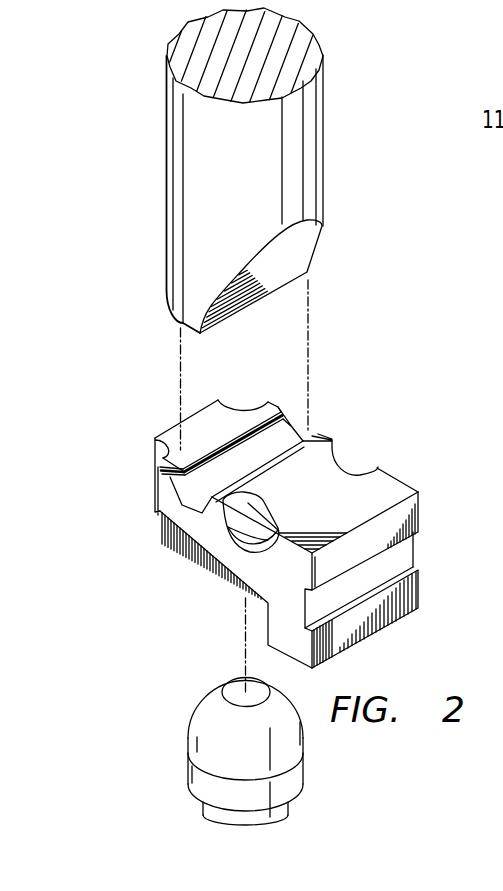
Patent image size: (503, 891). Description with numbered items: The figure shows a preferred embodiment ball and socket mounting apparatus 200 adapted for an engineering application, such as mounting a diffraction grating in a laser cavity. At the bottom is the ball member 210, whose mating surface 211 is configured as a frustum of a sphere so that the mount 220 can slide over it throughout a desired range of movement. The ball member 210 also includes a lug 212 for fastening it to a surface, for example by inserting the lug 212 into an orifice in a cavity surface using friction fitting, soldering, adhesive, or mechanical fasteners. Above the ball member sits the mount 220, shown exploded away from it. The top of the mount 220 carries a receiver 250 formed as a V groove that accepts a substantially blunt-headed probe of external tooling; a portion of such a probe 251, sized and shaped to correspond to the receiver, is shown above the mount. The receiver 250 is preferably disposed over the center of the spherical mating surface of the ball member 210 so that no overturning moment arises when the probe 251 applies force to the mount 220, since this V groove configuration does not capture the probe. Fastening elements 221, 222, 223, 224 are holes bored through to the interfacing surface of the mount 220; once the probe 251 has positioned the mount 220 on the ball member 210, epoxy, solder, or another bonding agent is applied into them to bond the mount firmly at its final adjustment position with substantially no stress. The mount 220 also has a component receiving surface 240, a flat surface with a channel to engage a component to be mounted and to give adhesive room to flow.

The mounting apparatus 200 is at (80, 460).
The ball member 210 is at (232, 687).
The mating surface 211 is at (202, 723).
The lug 212 is at (213, 817).
The mount 220 is at (394, 488).
The fastening element 221 is at (345, 458).
The fastening element 222 is at (240, 408).
The fastening element 223 is at (150, 452).
The fastening element 224 is at (252, 518).
The component receiving surface 240 is at (420, 513).
The receiver 250 is at (287, 441).
The probe 251 is at (308, 248).